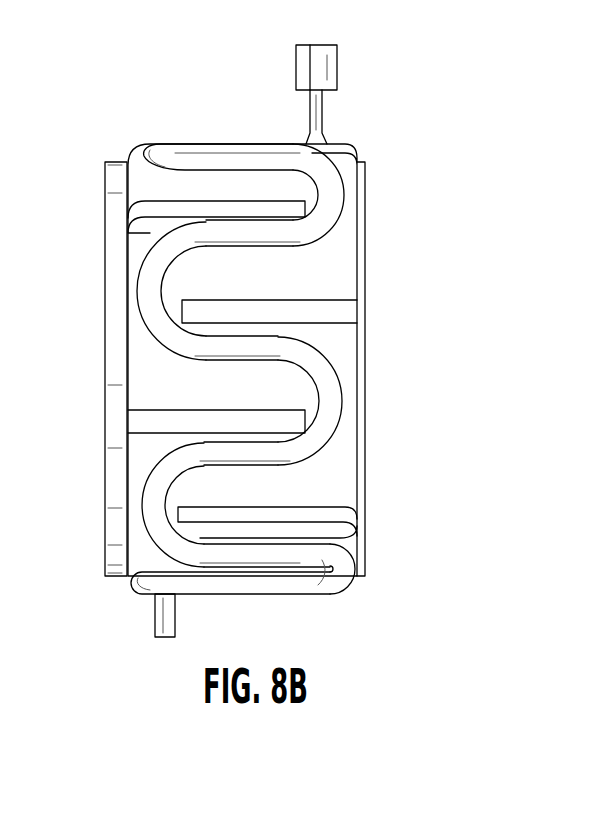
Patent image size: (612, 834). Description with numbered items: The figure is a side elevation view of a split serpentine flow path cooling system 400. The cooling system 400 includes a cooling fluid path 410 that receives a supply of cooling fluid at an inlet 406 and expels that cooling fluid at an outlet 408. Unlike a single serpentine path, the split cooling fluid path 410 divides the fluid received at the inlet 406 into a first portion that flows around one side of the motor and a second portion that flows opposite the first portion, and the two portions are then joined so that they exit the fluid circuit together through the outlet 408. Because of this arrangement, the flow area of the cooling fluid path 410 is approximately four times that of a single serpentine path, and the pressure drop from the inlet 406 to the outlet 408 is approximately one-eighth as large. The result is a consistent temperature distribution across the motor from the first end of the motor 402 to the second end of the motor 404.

The split serpentine flow path cooling system 400 is at (240, 330).
The first end of the motor 402 is at (118, 379).
The second end of the motor 404 is at (299, 369).
The inlet 406 is at (163, 610).
The outlet 408 is at (330, 67).
The cooling fluid path 410 is at (342, 207).